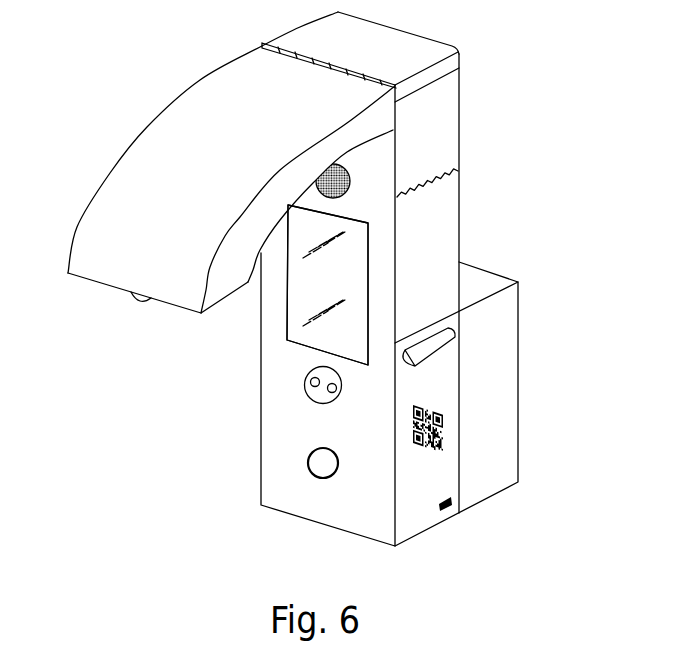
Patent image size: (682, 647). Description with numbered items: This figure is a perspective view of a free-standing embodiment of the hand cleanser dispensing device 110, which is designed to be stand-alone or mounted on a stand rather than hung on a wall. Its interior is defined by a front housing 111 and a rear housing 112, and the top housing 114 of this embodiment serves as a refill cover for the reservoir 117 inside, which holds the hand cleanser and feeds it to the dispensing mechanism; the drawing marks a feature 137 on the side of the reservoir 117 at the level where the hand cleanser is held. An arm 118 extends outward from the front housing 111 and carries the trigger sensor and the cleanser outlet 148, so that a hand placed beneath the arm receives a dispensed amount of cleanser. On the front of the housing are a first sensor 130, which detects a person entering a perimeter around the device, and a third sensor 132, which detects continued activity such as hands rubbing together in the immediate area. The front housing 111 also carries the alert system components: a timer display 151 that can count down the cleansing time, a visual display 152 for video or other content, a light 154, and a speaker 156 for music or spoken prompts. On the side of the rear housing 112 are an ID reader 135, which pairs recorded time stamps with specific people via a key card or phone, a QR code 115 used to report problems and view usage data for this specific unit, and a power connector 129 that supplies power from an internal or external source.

The dispensing device 110 is at (114, 44).
The front housing 111 is at (375, 520).
The rear housing 112 is at (512, 368).
The top housing 114 is at (430, 45).
The QR code 115 is at (447, 427).
The reservoir 117 is at (433, 135).
The arm 118 is at (150, 155).
The power connector 129 is at (452, 508).
The first sensor 130 is at (310, 387).
The third sensor 132 is at (328, 391).
The ID reader 135 is at (450, 340).
The seam 137 is at (433, 181).
The cleanser outlet 148 is at (137, 300).
The timer display 151 is at (287, 340).
The visual display 152 is at (265, 308).
The light 154 is at (312, 473).
The speaker 156 is at (350, 193).